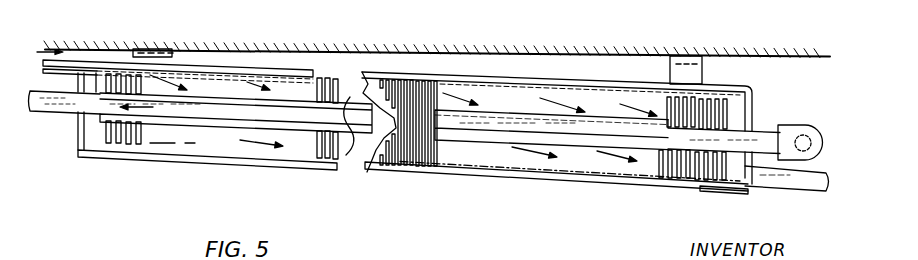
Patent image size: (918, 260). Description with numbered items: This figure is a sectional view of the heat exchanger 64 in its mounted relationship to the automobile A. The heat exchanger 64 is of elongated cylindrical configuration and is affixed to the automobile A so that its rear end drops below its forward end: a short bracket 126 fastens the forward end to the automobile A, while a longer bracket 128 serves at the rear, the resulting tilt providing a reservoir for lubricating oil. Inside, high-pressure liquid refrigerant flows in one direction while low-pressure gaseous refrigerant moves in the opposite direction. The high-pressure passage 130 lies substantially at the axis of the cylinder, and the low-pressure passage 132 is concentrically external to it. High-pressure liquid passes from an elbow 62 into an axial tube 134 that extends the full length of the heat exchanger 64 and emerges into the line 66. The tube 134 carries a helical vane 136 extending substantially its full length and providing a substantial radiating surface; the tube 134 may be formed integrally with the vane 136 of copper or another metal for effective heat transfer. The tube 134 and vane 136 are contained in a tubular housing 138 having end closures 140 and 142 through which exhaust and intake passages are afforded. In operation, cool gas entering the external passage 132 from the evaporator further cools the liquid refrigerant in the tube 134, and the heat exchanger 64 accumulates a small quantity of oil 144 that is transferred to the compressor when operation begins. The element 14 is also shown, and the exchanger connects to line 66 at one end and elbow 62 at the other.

The automobile A is at (652, 51).
The short bracket 126 is at (160, 48).
The longer bracket 128 is at (692, 74).
The end closure 140 is at (88, 163).
The line 66 is at (63, 112).
The high-pressure passage 130 is at (289, 114).
The low-pressure passage 132 is at (203, 140).
The helical vane 136 is at (440, 72).
The tubular housing 138 is at (376, 168).
The heat exchanger 64 is at (441, 187).
The oil 144 is at (544, 168).
The end closure 142 is at (733, 193).
The axial tube 134 is at (737, 131).
The elbow 62 is at (809, 128).
The tube 14 is at (790, 186).